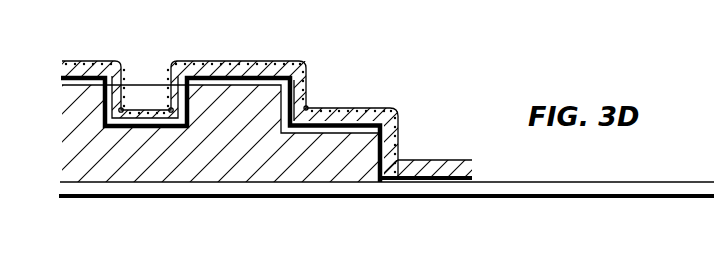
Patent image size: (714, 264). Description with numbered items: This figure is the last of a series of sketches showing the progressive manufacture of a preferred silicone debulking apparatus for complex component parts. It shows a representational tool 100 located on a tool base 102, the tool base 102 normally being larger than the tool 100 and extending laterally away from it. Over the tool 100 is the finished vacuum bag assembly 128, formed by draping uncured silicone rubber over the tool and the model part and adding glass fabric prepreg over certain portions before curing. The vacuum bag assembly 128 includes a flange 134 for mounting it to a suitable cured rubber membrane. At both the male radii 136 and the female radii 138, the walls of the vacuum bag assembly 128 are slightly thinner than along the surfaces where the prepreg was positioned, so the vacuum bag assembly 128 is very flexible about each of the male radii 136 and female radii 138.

The tool 100 is at (211, 167).
The tool base 102 is at (504, 190).
The vacuum bag assembly 128 is at (296, 73).
The flange 134 is at (430, 162).
The male radii 136 is at (129, 35).
The female radii 138 is at (127, 99).